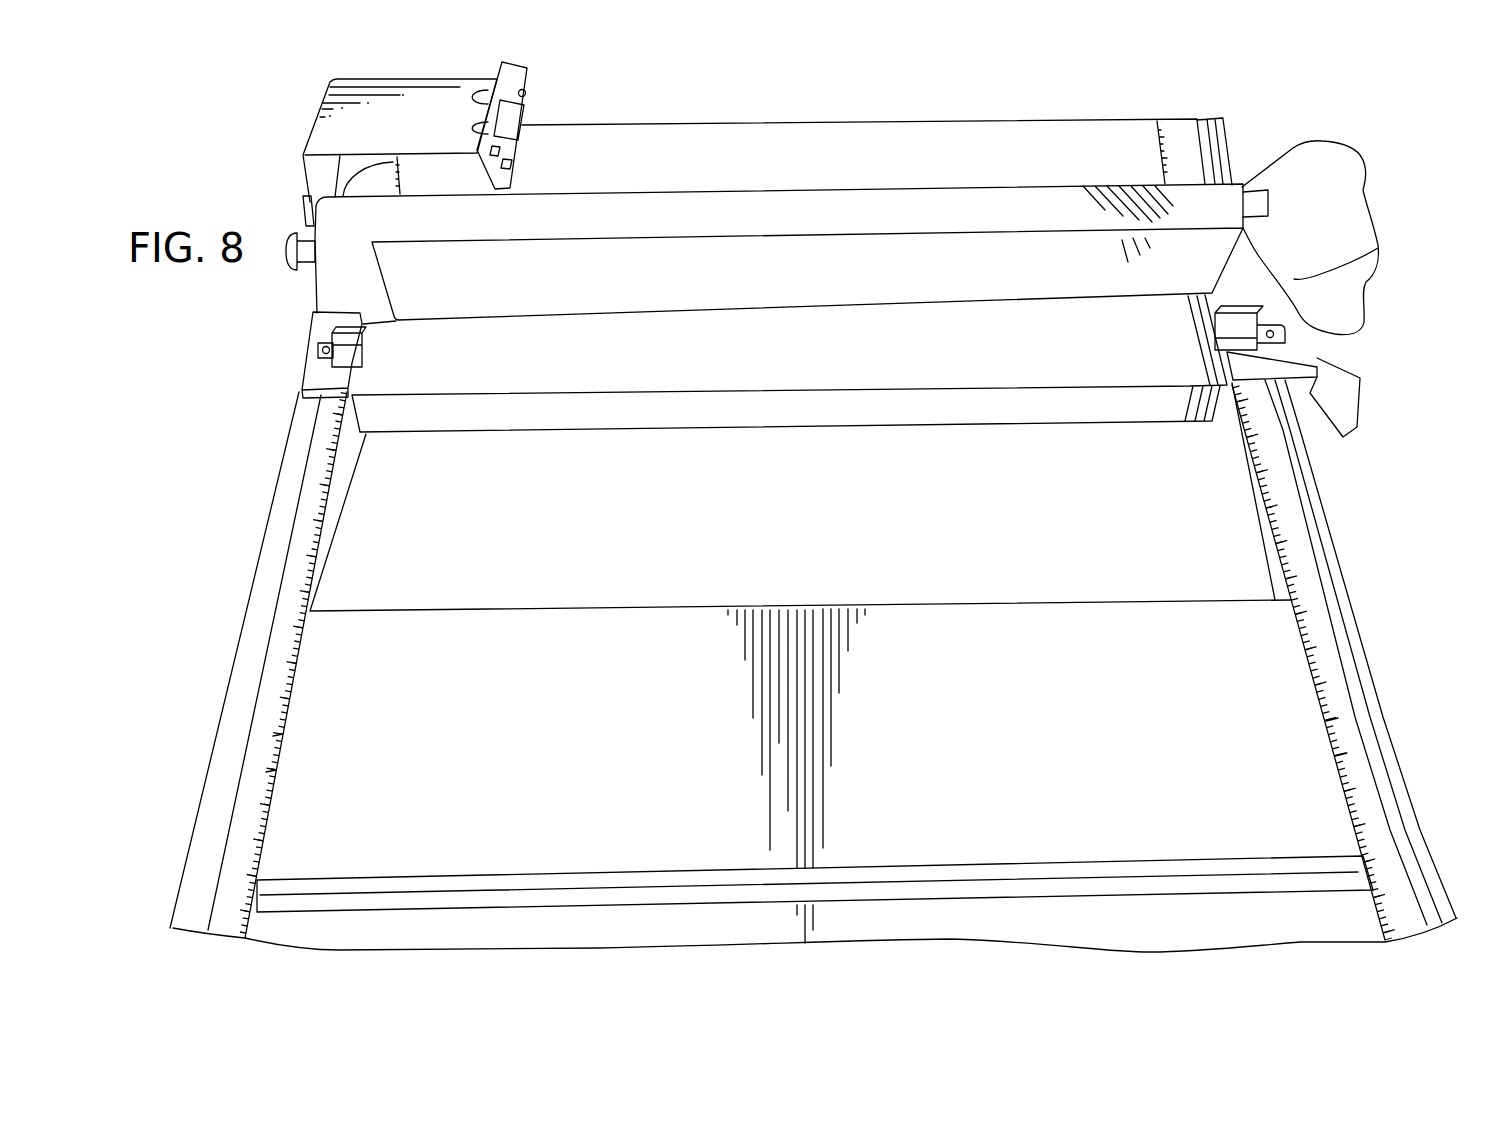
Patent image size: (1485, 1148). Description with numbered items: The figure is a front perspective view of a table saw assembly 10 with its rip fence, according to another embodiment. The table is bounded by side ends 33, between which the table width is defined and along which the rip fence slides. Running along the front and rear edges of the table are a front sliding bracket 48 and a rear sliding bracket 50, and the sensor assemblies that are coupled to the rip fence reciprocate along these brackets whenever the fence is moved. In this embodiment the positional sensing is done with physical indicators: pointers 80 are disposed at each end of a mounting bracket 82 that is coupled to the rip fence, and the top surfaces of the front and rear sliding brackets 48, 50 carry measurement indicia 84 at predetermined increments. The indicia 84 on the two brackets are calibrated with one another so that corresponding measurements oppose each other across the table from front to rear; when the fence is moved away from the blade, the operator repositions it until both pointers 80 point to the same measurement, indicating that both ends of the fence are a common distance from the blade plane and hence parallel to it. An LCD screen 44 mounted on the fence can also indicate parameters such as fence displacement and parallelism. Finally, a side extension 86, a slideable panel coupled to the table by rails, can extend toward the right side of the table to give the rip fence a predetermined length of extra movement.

The table saw assembly 10 is at (1295, 67).
The side ends 33 is at (983, 118).
The LCD screen 44 is at (510, 126).
The front sliding bracket 48 is at (1358, 640).
The rear sliding bracket 50 is at (266, 641).
The pointers 80 is at (348, 333).
The mounting bracket 82 is at (314, 378).
The measurement indicia 84 is at (277, 770).
The side extension 86 is at (688, 188).